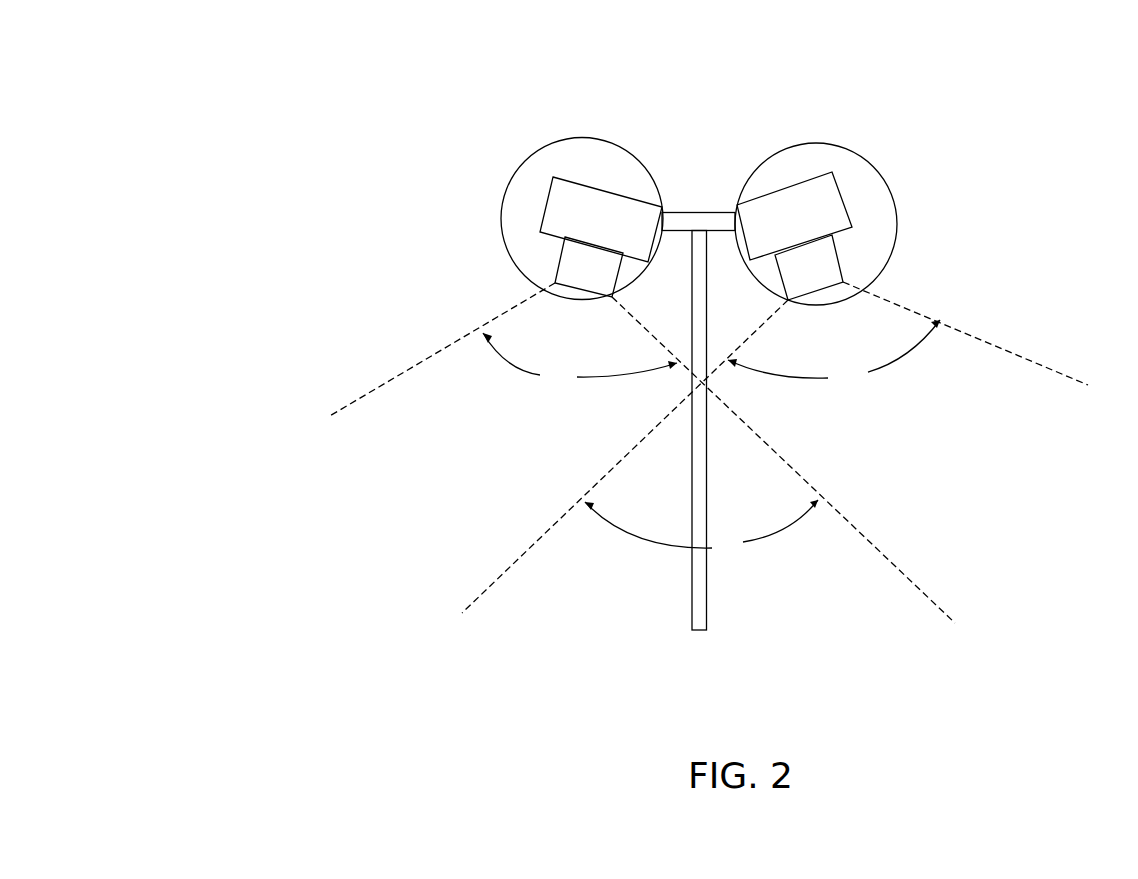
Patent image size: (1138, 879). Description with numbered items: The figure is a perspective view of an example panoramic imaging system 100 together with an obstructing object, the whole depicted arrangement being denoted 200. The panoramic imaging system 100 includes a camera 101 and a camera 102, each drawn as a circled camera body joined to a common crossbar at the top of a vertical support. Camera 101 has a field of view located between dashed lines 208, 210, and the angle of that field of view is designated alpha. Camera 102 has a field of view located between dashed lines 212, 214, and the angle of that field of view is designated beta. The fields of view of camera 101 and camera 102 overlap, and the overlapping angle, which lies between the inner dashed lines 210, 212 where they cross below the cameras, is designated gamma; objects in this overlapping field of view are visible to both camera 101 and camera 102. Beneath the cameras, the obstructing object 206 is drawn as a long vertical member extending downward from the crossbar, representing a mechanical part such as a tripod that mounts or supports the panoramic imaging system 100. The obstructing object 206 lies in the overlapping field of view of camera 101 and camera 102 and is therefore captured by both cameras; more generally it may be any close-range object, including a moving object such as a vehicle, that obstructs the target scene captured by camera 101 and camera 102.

The panoramic imaging system 100 is at (756, 170).
The camera 101 is at (587, 183).
The camera 102 is at (807, 182).
The camera mounting arrangement 200 is at (922, 160).
The obstructing object 206 is at (698, 625).
The dashed line 208 is at (357, 395).
The dashed line 210 is at (925, 593).
The dashed line 212 is at (492, 585).
The dashed line 214 is at (1010, 352).